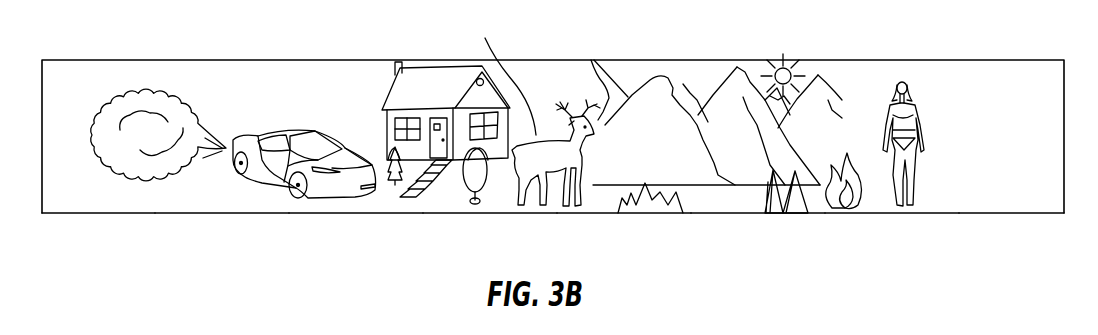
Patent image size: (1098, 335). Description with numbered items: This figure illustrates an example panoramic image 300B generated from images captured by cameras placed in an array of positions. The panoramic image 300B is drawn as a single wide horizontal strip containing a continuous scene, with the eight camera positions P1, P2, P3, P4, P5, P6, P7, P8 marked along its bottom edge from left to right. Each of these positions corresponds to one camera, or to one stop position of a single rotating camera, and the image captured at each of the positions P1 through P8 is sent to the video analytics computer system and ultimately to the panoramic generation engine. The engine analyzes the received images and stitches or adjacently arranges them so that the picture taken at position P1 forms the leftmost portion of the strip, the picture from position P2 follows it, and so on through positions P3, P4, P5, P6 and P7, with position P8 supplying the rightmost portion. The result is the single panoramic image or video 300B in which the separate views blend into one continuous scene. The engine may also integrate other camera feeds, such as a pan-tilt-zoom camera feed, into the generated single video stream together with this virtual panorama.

The panoramic image 300B is at (216, 28).
The position P1 is at (98, 231).
The position P2 is at (222, 231).
The position P3 is at (356, 231).
The position P4 is at (490, 231).
The position P5 is at (624, 231).
The position P6 is at (758, 231).
The position P7 is at (892, 231).
The position P8 is at (1011, 231).